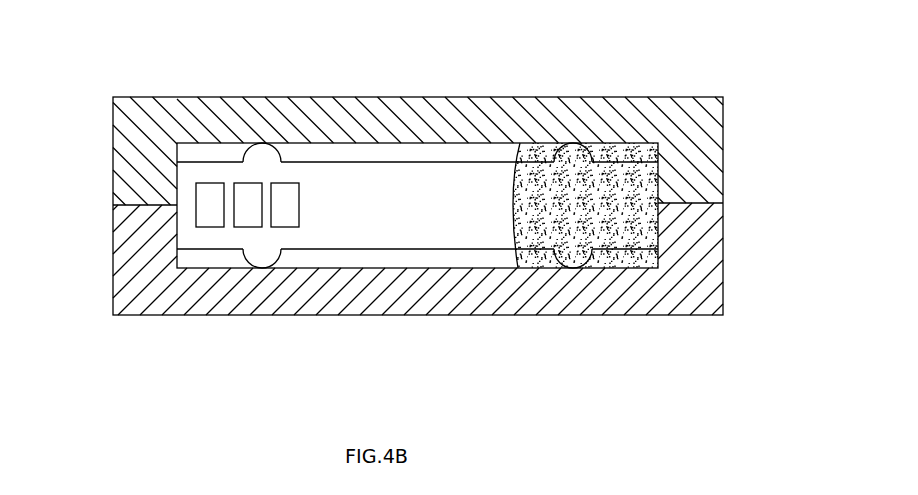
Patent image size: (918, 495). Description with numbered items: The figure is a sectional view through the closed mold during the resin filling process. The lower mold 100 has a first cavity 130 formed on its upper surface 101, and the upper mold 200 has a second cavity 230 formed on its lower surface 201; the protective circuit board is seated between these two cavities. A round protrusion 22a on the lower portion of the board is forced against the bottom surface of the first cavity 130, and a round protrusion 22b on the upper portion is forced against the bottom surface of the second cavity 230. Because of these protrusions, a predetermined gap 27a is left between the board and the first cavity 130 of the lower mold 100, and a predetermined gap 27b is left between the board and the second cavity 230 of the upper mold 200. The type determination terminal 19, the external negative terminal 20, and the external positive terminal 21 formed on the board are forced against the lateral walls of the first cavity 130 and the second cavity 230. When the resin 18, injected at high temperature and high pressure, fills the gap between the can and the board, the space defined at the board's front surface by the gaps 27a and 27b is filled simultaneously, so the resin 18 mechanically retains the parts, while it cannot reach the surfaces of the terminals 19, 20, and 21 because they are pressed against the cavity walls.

The resin 18 is at (627, 252).
The type determination terminal 19 is at (288, 222).
The external negative terminal 20 is at (248, 225).
The external positive terminal 21 is at (210, 222).
The round protrusion 22a is at (262, 268).
The round protrusion 22b is at (261, 143).
The gap 27a is at (375, 258).
The gap 27b is at (507, 150).
The lower mold 100 is at (130, 260).
The upper surface 101 is at (683, 200).
The first cavity 130 is at (443, 257).
The upper mold 200 is at (128, 150).
The lower surface 201 is at (716, 205).
The second cavity 230 is at (411, 146).